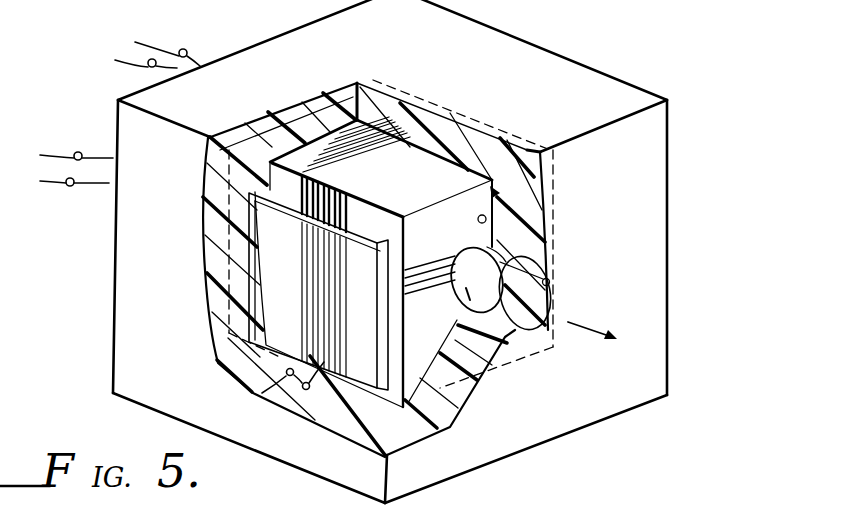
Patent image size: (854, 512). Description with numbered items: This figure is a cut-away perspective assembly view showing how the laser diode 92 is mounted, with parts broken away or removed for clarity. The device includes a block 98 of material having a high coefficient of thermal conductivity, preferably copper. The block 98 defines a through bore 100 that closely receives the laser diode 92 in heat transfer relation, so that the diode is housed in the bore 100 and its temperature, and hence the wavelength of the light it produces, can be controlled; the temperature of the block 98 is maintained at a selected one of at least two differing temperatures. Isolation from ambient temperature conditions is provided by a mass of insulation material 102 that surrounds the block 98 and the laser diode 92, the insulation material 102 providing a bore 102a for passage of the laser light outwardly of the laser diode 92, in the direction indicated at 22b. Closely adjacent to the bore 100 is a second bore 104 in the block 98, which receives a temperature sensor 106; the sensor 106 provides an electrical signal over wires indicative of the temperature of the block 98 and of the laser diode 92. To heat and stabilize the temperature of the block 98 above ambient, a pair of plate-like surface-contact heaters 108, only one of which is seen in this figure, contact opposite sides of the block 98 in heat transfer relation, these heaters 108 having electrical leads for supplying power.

The insertion direction arrow 22b is at (587, 333).
The laser diode 92 is at (466, 292).
The block 98 is at (418, 155).
The through bore 100 is at (500, 265).
The insulation material 102 is at (663, 313).
The bore 102a is at (527, 303).
The second bore 104 is at (498, 193).
The temperature sensor 106 is at (487, 220).
The surface-contact heater 108 is at (263, 271).